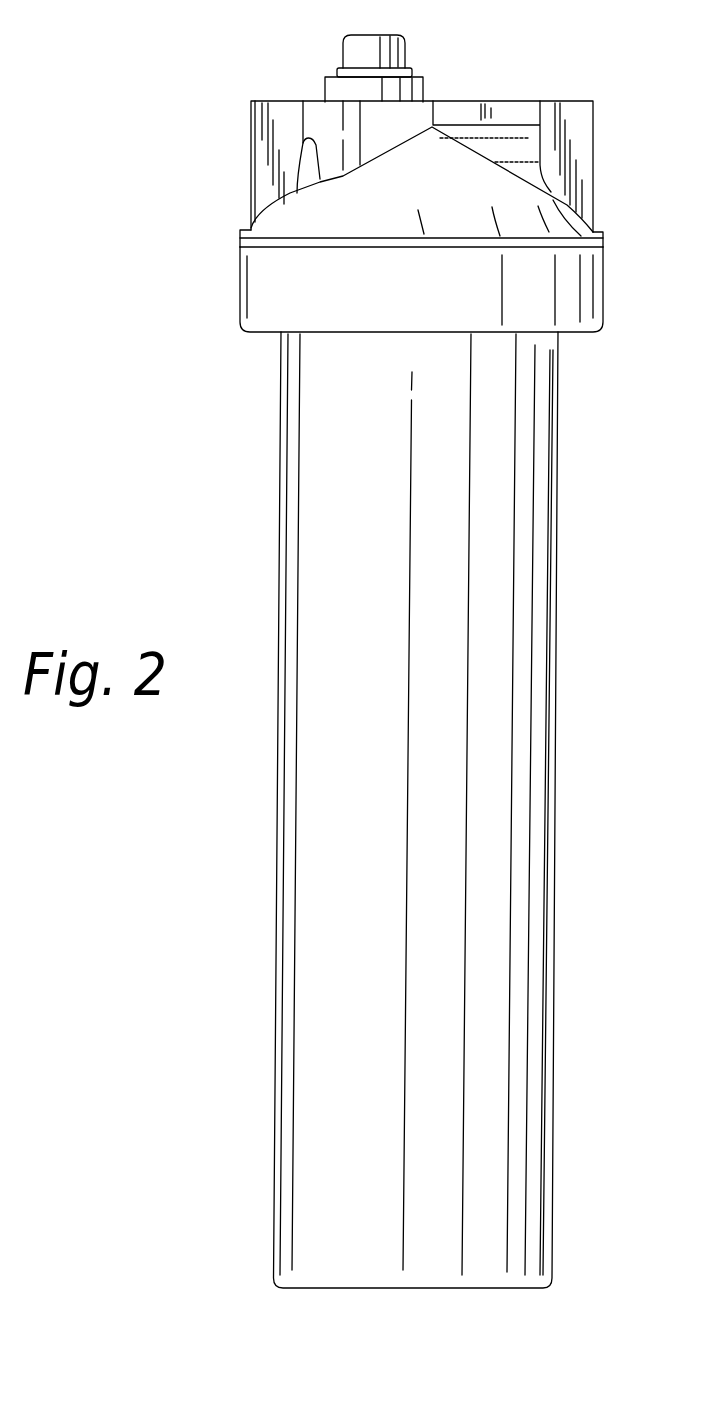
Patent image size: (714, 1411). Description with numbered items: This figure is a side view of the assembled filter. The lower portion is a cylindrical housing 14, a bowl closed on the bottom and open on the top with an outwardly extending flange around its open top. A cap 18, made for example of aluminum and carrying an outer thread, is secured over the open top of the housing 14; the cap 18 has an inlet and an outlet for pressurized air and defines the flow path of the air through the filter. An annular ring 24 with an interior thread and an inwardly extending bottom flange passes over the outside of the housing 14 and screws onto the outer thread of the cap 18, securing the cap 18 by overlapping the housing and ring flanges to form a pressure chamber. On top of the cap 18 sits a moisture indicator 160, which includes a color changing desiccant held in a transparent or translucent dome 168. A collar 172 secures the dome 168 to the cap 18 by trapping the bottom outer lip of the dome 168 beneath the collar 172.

The housing 14 is at (375, 708).
The cap 18 is at (431, 211).
The annular ring 24 is at (390, 300).
The moisture indicator 160 is at (314, 62).
The dome 168 is at (368, 55).
The collar 172 is at (424, 90).